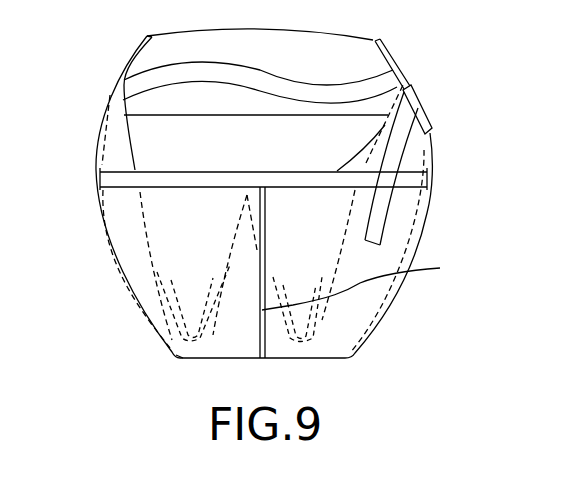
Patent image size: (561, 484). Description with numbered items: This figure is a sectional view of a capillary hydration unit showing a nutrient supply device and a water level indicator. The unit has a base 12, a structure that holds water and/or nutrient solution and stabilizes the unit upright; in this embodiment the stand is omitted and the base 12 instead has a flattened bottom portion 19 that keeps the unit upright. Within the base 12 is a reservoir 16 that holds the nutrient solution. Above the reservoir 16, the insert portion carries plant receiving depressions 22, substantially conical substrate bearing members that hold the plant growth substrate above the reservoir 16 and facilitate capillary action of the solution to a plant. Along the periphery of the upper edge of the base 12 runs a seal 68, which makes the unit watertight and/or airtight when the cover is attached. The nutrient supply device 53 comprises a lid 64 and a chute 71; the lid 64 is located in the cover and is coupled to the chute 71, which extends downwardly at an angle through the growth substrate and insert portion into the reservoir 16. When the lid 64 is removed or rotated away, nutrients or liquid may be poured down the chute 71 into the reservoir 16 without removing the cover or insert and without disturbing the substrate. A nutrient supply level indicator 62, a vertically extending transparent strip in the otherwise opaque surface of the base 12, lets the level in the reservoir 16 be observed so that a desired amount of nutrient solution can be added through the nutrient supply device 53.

The base 12 is at (383, 315).
The reservoir 16 is at (400, 220).
The flattened bottom portion 19 is at (181, 360).
The plant receiving depressions 22 is at (206, 234).
The nutrient supply device 53 is at (449, 104).
The nutrient supply level indicator 62 is at (363, 283).
The lid 64 is at (404, 90).
The seal 68 is at (98, 172).
The chute 71 is at (406, 157).